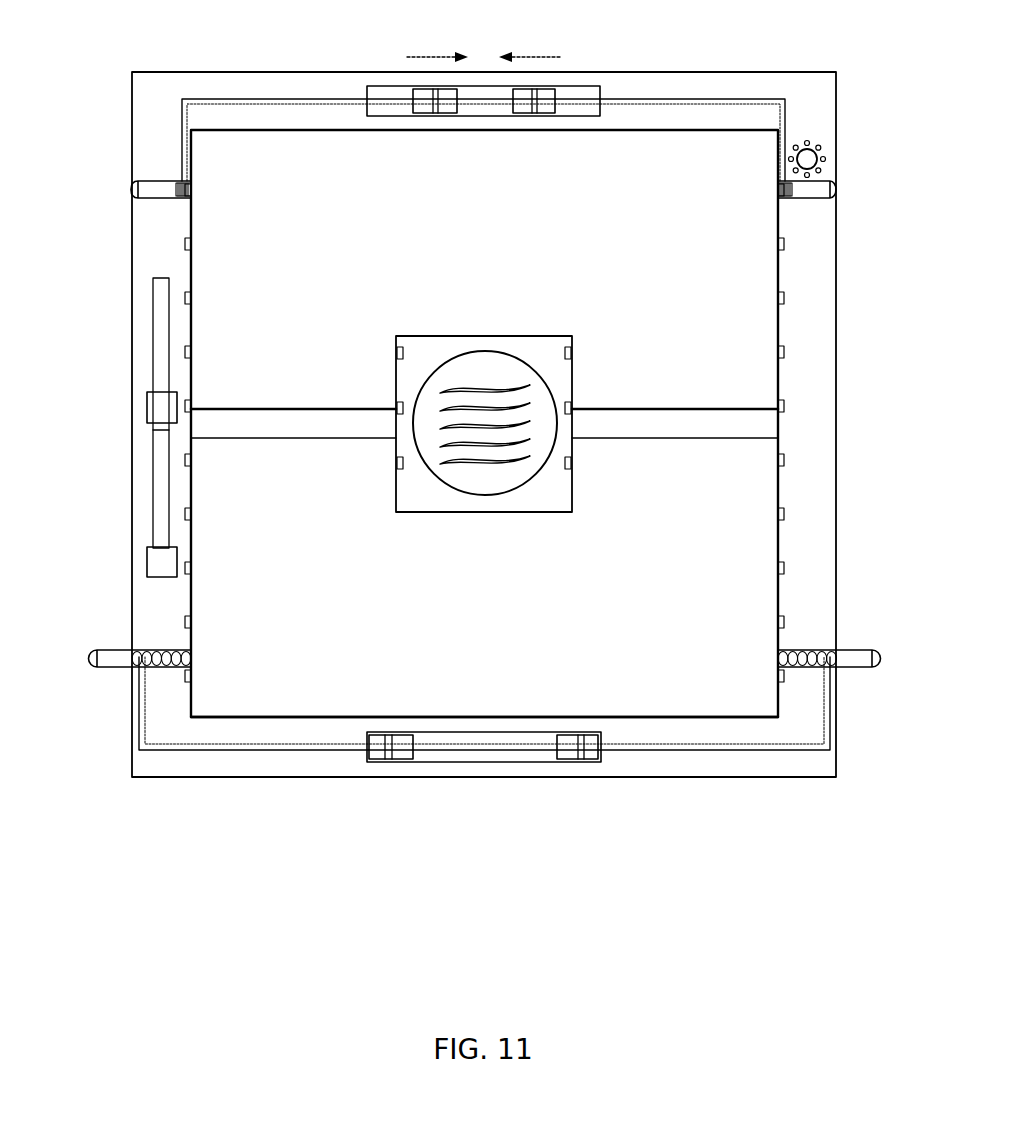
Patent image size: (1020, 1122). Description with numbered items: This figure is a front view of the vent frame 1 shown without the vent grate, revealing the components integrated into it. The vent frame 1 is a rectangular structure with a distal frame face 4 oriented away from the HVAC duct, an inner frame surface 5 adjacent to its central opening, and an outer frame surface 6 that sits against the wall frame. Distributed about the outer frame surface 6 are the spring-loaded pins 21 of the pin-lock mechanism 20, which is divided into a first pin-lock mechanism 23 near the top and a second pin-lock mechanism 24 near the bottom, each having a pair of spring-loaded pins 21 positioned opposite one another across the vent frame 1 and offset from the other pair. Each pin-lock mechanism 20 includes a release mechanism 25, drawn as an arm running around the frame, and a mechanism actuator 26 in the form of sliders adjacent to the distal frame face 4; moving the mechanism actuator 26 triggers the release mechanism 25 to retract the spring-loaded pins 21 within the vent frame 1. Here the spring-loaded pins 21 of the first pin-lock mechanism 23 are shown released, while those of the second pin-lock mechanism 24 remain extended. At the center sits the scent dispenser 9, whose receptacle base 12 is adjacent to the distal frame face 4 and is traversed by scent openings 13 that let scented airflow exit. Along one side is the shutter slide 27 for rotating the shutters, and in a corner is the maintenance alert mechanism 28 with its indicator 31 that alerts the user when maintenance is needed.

The vent frame 1 is at (726, 822).
The distal frame face 4 is at (730, 723).
The inner frame surface 5 is at (638, 714).
The outer frame surface 6 is at (640, 780).
The scent dispenser 9 is at (592, 314).
The receptacle base 12 is at (456, 484).
The scent openings 13 is at (505, 388).
The pin-lock mechanism 20 is at (492, 435).
The spring-loaded pins 21 is at (148, 195).
The first pin-lock mechanism 23 is at (92, 182).
The second pin-lock mechanism 24 is at (84, 650).
The release mechanism 25 is at (211, 98).
The mechanism actuator 26 is at (447, 107).
The shutter slide 27 is at (152, 405).
The maintenance alert mechanism 28 is at (844, 137).
The indicator 31 is at (812, 155).